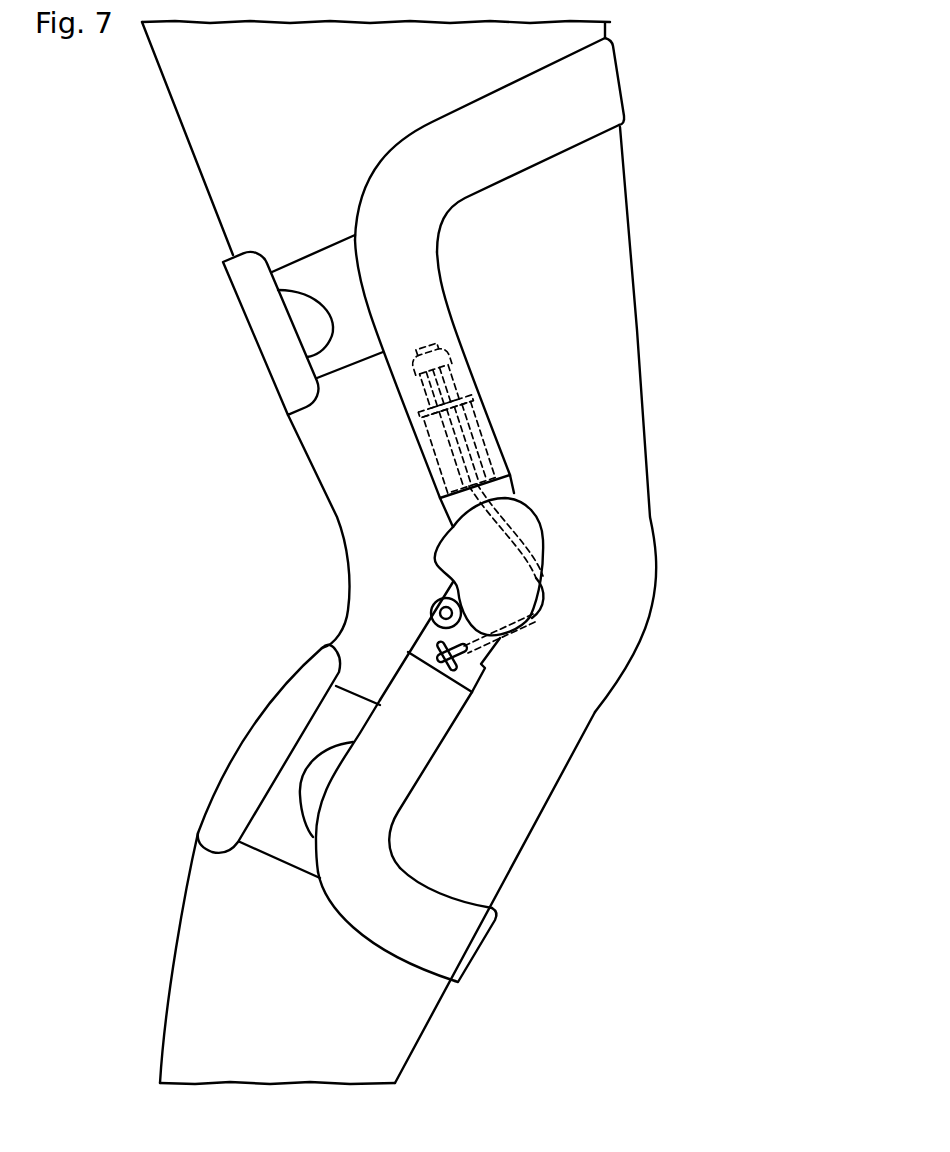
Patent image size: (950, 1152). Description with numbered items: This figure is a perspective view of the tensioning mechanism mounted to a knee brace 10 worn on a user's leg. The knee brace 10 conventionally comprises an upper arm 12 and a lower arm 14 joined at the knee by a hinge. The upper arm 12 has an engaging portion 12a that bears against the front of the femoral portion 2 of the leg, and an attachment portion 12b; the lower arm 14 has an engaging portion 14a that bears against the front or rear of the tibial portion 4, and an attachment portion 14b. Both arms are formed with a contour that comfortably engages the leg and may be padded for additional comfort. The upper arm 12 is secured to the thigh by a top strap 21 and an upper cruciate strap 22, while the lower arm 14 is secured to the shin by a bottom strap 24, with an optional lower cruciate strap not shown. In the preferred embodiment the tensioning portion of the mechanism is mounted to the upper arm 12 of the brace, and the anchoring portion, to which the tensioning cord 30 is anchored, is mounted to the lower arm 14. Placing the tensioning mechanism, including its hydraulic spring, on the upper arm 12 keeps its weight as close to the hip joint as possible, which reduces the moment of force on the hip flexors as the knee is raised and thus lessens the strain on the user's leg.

The femoral portion 2 is at (548, 263).
The tibial portion 4 is at (461, 844).
The knee brace 10 is at (500, 425).
The upper arm 12 is at (541, 128).
The engaging portion 12a is at (586, 96).
The attachment portion 12b is at (450, 328).
The lower arm 14 is at (428, 927).
The engaging portion 14a is at (458, 938).
The attachment portion 14b is at (398, 727).
The top strap 21 is at (333, 277).
The upper cruciate strap 22 is at (272, 347).
The bottom strap 24 is at (265, 832).
The tensioning cord 30 is at (547, 598).